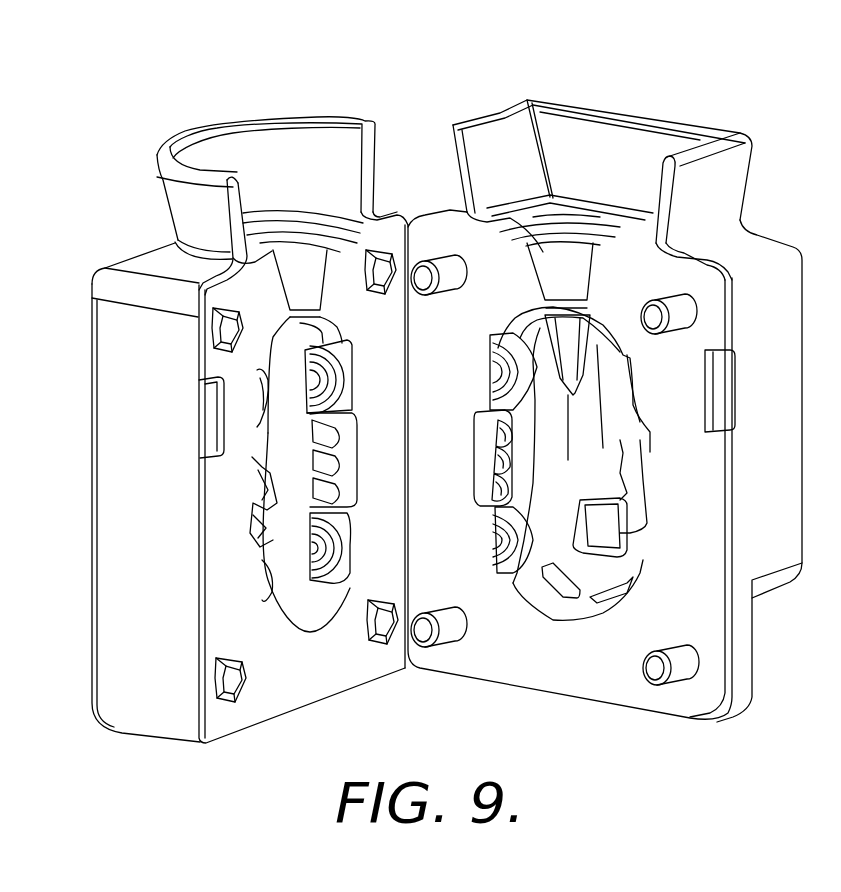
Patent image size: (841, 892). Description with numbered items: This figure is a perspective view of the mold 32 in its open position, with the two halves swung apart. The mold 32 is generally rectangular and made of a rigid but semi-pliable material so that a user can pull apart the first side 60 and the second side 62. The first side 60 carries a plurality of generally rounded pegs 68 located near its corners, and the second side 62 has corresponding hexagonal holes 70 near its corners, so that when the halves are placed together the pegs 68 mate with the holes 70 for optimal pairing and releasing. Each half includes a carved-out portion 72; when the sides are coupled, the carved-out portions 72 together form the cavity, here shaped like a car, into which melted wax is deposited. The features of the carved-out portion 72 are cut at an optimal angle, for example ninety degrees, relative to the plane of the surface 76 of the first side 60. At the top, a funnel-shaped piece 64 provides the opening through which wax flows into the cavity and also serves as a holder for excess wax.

The mold 32 is at (214, 86).
The first side 60 is at (790, 324).
The second side 62 is at (102, 322).
The funnel-shaped piece 64 is at (480, 117).
The pegs 68 is at (660, 687).
The holes 70 is at (212, 690).
The carved-out portions 72 is at (297, 605).
The surface 76 is at (693, 282).